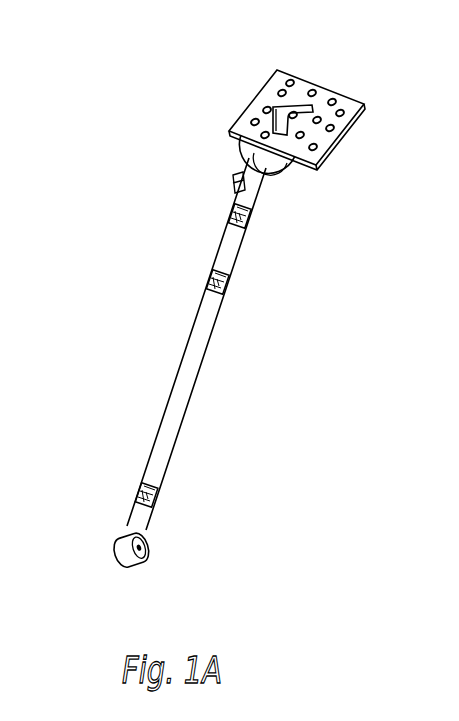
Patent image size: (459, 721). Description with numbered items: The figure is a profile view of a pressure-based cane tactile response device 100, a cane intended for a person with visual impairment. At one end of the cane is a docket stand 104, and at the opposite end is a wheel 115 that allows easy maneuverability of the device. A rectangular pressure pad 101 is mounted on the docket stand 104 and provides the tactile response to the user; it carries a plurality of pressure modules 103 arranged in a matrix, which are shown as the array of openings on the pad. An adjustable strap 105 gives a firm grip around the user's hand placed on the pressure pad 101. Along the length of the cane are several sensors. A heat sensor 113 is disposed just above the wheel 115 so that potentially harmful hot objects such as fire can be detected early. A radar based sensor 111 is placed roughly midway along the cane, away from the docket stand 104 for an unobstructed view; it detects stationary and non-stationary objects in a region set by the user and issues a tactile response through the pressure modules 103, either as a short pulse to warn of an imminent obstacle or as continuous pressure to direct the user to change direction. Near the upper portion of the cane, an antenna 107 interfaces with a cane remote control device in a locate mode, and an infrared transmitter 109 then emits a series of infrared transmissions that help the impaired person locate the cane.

The pressure-based cane tactile response device 100 is at (107, 105).
The pressure pad 101 is at (345, 135).
The pressure modules 103 is at (333, 98).
The docket stand 104 is at (288, 177).
The adjustable strap 105 is at (281, 89).
The antenna 107 is at (233, 180).
The infrared (IR) transmitter 109 is at (252, 217).
The radar based sensor 111 is at (231, 281).
The heat sensor 113 is at (157, 500).
The wheel 115 is at (139, 561).